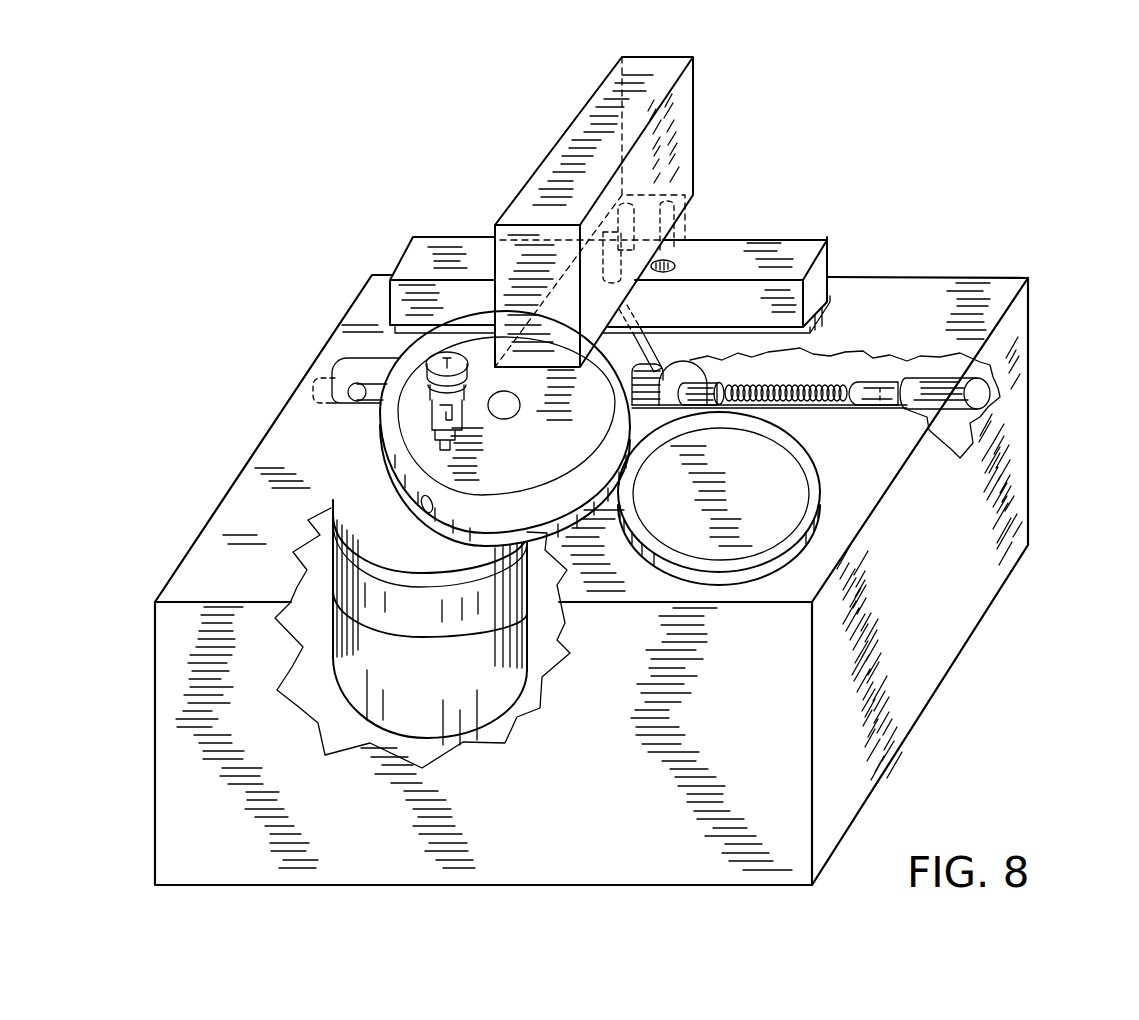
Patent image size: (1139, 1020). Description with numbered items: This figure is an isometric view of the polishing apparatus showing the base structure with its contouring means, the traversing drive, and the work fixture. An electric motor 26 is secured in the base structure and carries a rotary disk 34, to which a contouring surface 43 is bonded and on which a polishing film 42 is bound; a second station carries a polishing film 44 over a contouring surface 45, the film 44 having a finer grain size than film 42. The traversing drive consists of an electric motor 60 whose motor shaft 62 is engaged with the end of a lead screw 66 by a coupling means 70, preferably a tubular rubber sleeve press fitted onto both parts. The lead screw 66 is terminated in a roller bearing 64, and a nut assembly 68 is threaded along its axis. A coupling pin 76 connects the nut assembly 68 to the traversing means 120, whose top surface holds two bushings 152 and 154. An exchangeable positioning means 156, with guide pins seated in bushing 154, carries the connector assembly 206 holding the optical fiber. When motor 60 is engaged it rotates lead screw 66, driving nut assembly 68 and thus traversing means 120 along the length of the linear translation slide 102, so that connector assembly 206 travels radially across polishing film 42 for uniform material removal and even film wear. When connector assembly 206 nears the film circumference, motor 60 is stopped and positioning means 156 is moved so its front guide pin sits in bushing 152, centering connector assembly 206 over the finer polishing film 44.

The positioning means 156 is at (673, 120).
The bushing 154 is at (607, 262).
The bushing 152 is at (674, 264).
The traversing means 120 is at (820, 272).
The linear translation slide 102 is at (823, 313).
The coupling pin 76 is at (653, 340).
The nut assembly 68 is at (672, 370).
The lead screw 66 is at (745, 390).
The coupling means 70 is at (852, 392).
The motor shaft 62 is at (888, 392).
The electric motor 60 is at (962, 387).
The roller bearing 64 is at (322, 385).
The polishing film 42 is at (358, 467).
The connector assembly 206 is at (467, 412).
The contouring surface 43 is at (345, 550).
The rotary disk 34 is at (343, 580).
The electric motor 26 is at (360, 667).
The polishing film 44 is at (790, 470).
The contouring surface 45 is at (820, 548).